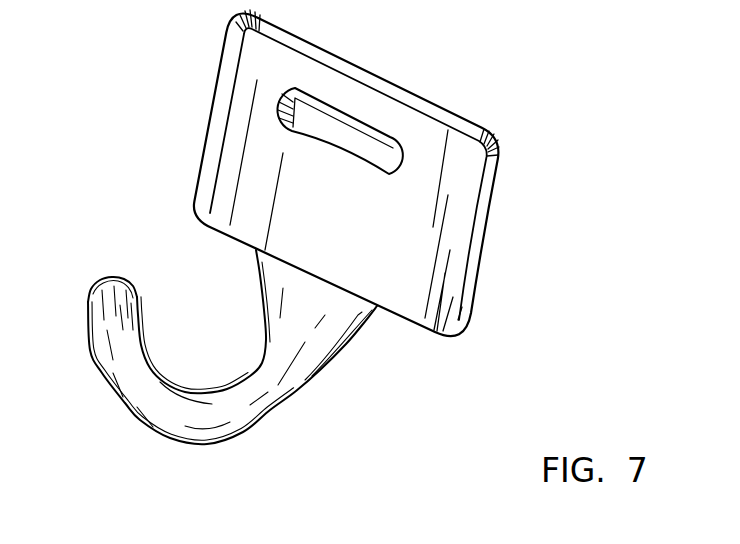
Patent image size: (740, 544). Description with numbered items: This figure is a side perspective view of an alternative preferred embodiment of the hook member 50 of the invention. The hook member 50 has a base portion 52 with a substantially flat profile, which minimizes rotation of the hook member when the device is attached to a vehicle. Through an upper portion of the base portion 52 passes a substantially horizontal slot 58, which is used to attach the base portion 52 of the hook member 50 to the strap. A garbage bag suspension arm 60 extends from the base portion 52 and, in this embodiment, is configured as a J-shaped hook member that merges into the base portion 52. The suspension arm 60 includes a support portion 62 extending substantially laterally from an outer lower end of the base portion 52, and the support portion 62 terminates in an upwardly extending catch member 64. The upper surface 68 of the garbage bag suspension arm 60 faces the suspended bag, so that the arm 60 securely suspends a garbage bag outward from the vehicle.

The hook member 50 is at (352, 239).
The base portion 52 is at (426, 169).
The slot 58 is at (364, 136).
The garbage bag suspension arm 60 is at (214, 335).
The support portion 62 is at (208, 417).
The catch member 64 is at (138, 306).
The upper surface 68 is at (267, 378).